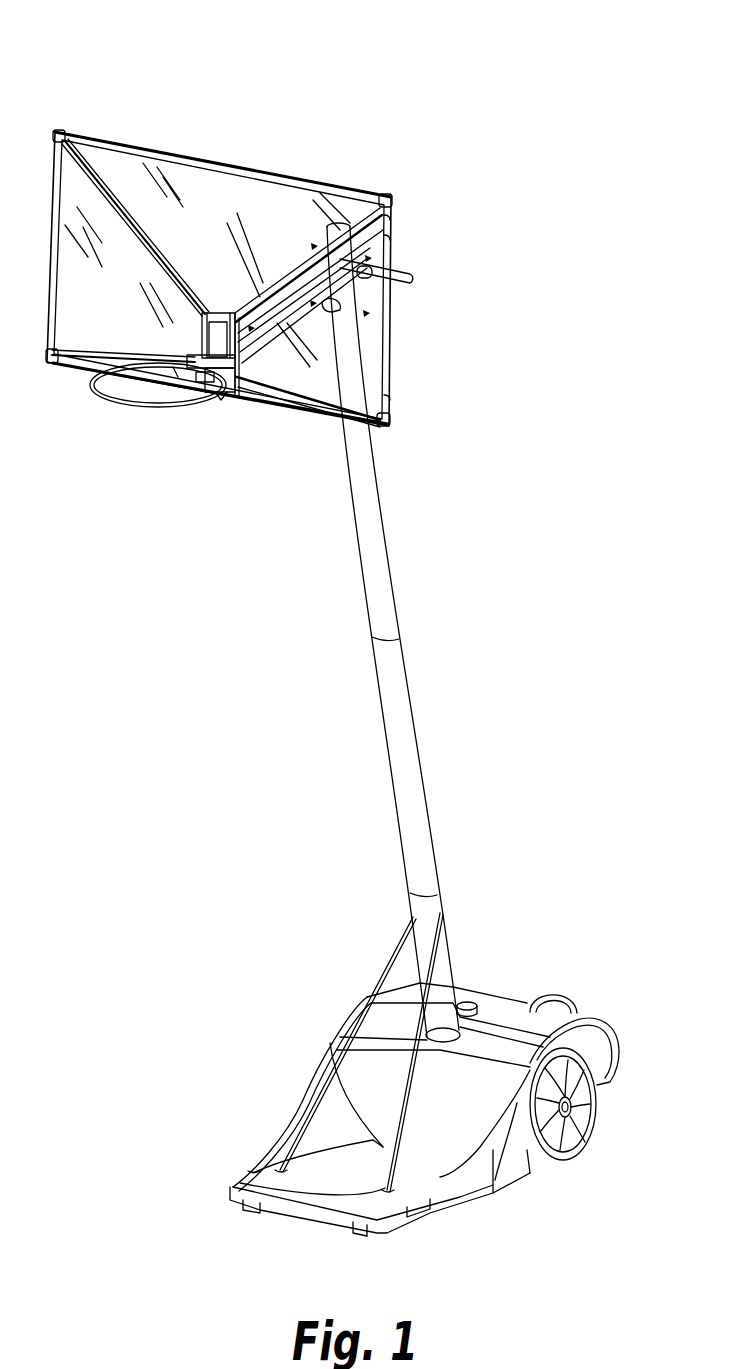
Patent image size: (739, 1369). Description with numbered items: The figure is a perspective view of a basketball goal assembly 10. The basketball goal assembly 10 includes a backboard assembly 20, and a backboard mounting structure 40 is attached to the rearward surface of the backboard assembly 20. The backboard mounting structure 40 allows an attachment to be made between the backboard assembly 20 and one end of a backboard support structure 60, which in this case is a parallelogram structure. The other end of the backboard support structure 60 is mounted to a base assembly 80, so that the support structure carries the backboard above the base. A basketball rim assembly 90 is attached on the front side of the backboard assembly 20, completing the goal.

The basketball goal assembly 10 is at (430, 132).
The backboard assembly 20 is at (110, 104).
The backboard mounting structure 40 is at (240, 387).
The backboard support structure 60 is at (343, 323).
The base assembly 80 is at (445, 675).
The basketball rim assembly 90 is at (173, 367).